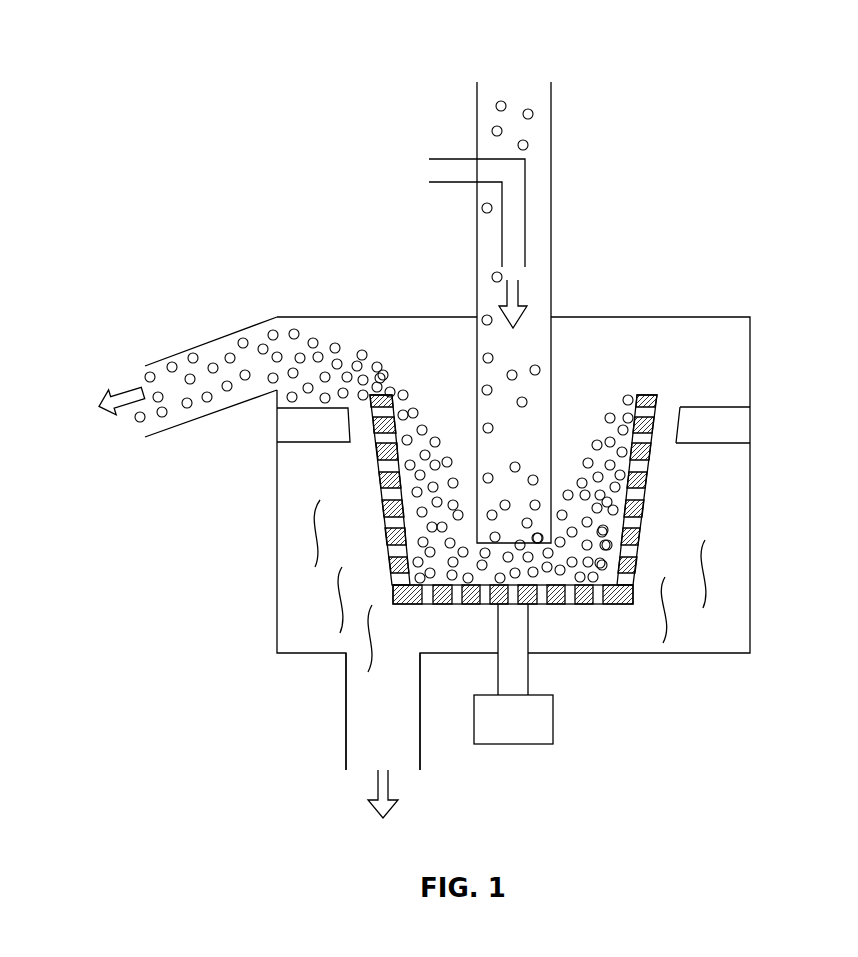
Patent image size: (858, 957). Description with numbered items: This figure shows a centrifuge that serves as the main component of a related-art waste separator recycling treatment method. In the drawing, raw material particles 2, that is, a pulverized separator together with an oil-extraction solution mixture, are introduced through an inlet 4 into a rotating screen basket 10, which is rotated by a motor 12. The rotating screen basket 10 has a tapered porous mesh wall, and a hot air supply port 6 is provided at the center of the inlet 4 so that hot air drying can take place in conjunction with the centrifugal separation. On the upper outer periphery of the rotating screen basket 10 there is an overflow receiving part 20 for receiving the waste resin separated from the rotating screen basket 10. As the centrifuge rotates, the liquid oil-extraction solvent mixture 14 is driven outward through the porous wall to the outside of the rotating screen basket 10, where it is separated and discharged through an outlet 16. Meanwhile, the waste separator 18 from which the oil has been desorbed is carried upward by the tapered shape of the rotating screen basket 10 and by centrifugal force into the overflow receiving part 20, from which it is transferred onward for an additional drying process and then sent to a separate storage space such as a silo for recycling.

The raw material particles 2 is at (535, 114).
The inlet 4 is at (513, 92).
The hot air supply port 6 is at (450, 157).
The rotating screen basket 10 is at (648, 488).
The motor 12 is at (512, 746).
The liquid oil-extraction solvent mixture 14 is at (310, 537).
The outlet 16 is at (362, 758).
The waste separator 18 is at (240, 345).
The overflow receiving part 20 is at (716, 407).